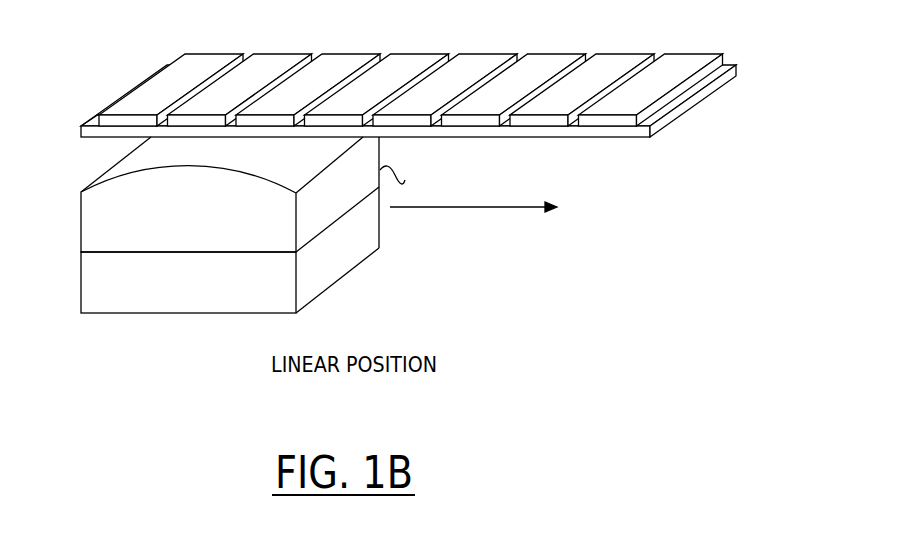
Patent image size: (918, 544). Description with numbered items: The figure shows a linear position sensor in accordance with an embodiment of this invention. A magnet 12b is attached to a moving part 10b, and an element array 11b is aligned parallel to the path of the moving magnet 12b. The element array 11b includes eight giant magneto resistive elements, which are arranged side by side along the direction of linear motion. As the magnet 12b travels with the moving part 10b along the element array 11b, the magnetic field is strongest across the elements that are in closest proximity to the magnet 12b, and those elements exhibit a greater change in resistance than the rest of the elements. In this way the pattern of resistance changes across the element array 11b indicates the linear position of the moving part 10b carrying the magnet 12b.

The moving part 10b is at (224, 251).
The element array 11b is at (742, 65).
The magnet 12b is at (98, 218).